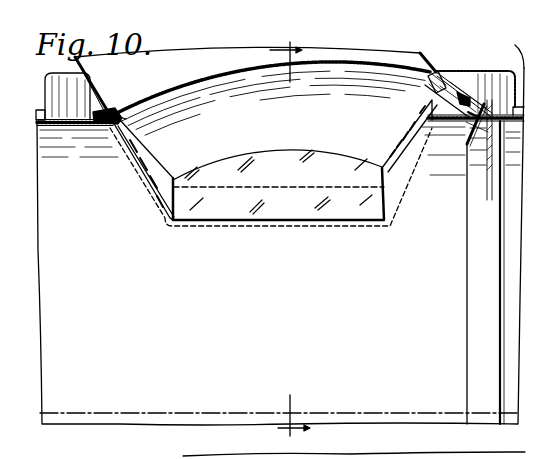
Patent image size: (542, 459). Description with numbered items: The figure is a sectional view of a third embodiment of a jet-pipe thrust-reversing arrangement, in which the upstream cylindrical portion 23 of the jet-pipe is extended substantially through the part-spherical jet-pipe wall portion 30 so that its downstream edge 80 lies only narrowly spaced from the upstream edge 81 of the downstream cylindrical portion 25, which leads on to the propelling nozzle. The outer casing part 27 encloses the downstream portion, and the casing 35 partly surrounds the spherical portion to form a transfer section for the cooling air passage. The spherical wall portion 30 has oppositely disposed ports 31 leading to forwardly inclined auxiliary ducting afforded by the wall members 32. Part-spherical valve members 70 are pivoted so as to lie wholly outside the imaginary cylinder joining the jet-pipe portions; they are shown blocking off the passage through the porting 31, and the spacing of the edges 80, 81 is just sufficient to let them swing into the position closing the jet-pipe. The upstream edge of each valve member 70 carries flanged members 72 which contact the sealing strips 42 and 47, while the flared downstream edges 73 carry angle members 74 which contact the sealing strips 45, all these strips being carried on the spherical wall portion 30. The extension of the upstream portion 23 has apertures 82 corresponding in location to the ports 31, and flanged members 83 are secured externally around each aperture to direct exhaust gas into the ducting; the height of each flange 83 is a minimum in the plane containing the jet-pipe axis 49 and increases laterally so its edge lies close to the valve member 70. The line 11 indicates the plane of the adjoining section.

The section line 11 is at (280, 238).
The upstream cylindrical portion 23 is at (60, 128).
The downstream cylindrical portion 25 is at (491, 150).
The outer casing part 27 is at (520, 56).
The part-spherical jet-pipe wall portion 30 is at (93, 128).
The ports 31 is at (113, 105).
The wall members 32 is at (183, 62).
The casing 35 is at (62, 122).
The sealing strips 42 is at (99, 100).
The sealing strips 45 is at (472, 88).
The second sealing strip 47 is at (428, 78).
The axis of the jet-pipe 49 is at (190, 412).
The part-spherical valve members 70 is at (337, 68).
The flanged members 72 is at (122, 106).
The downstream edges 73 is at (488, 122).
The angle members 74 is at (480, 116).
The downstream edge 80 is at (468, 285).
The upstream edge 81 is at (500, 264).
The apertures 82 is at (183, 222).
The flanged members 83 is at (145, 162).